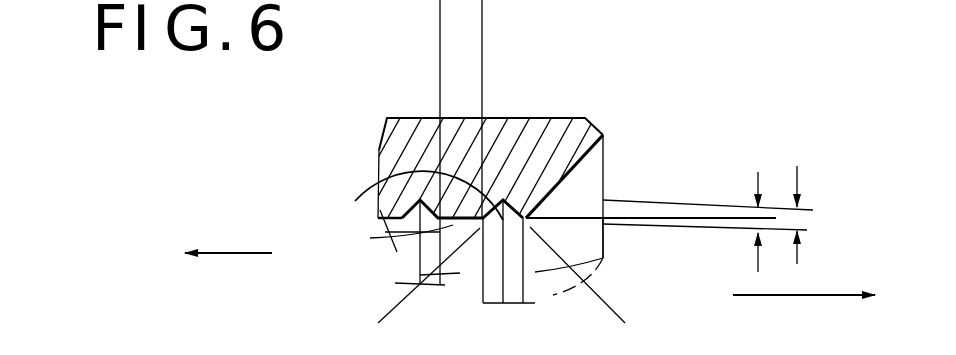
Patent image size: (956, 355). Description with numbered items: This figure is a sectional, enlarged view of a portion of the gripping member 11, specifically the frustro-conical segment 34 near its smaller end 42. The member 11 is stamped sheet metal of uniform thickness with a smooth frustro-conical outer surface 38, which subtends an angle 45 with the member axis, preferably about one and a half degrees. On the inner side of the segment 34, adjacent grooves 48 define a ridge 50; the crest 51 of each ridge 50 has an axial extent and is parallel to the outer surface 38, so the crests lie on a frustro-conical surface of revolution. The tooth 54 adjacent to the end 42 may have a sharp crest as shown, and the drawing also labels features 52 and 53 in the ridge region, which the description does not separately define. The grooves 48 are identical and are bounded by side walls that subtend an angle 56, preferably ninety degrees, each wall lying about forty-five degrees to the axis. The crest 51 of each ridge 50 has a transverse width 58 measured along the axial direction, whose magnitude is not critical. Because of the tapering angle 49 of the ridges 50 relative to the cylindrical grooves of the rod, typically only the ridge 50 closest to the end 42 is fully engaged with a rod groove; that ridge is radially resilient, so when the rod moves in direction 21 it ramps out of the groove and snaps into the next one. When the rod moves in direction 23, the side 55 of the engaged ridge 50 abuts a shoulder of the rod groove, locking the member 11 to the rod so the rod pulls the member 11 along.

The gripping member 11 is at (597, 96).
The direction 21 is at (226, 253).
The direction 23 is at (812, 296).
The frustro-conical segment 34 is at (380, 144).
The outer surface 38 is at (512, 118).
The smaller end 42 is at (606, 165).
The angle 45 is at (798, 262).
The grooves 48 is at (380, 190).
The tapering angle 49 is at (755, 195).
The ridge 50 is at (393, 255).
The crest 51 is at (385, 232).
The first locating pin 52 is at (460, 273).
The second locating pin 53 is at (494, 287).
The tooth 54 is at (603, 258).
The side 55 is at (396, 272).
The angle 56 is at (608, 308).
The transverse width 58 is at (390, 16).